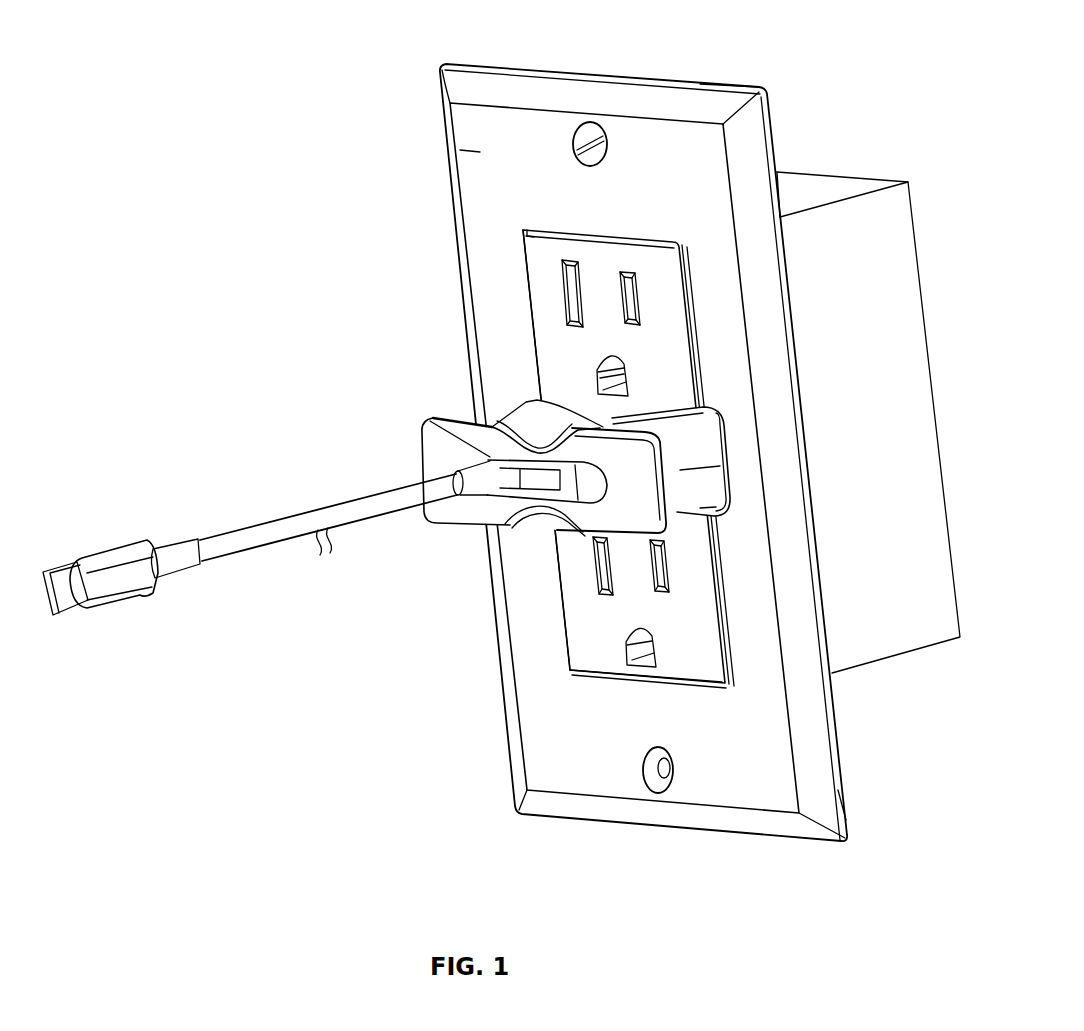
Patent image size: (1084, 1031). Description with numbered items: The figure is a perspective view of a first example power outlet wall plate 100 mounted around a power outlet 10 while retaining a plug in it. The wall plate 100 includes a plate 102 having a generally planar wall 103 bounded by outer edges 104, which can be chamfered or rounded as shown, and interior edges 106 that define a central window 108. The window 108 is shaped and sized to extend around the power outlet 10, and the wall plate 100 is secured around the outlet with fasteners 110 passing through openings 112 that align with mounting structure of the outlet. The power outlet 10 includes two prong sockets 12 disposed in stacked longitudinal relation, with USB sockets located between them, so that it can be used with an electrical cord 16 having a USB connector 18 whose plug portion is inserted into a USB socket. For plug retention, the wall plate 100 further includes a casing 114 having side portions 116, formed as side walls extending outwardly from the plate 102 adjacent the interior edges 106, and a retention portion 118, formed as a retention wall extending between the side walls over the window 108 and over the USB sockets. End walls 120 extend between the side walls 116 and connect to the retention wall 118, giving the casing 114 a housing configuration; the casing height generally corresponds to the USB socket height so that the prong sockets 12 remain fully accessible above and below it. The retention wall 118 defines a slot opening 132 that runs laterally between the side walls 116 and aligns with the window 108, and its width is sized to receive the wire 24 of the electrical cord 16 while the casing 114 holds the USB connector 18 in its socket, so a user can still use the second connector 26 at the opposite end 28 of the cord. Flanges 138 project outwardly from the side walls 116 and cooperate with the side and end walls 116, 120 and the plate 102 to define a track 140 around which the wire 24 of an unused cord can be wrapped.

The power outlet wall plate 100 is at (208, 84).
The power outlet 10 is at (653, 363).
The prong socket 12 is at (643, 297).
The electrical cord 16 is at (250, 571).
The USB connector 18 is at (620, 499).
The wire 24 is at (362, 522).
The second connector 26 is at (117, 605).
The opposite end 28 is at (162, 577).
The plate 102 is at (472, 207).
The planar wall 103 is at (472, 153).
The outer edges 104 is at (733, 85).
The interior edges 106 is at (523, 322).
The central window 108 is at (689, 662).
The fasteners 110 is at (590, 126).
The openings 112 is at (667, 795).
The casing 114 is at (710, 487).
The side portions 116 is at (707, 468).
The retention portion 118 is at (473, 508).
The end walls 120 is at (507, 411).
The slot opening 132 is at (508, 520).
The flanges 138 is at (435, 438).
The track 140 is at (705, 506).